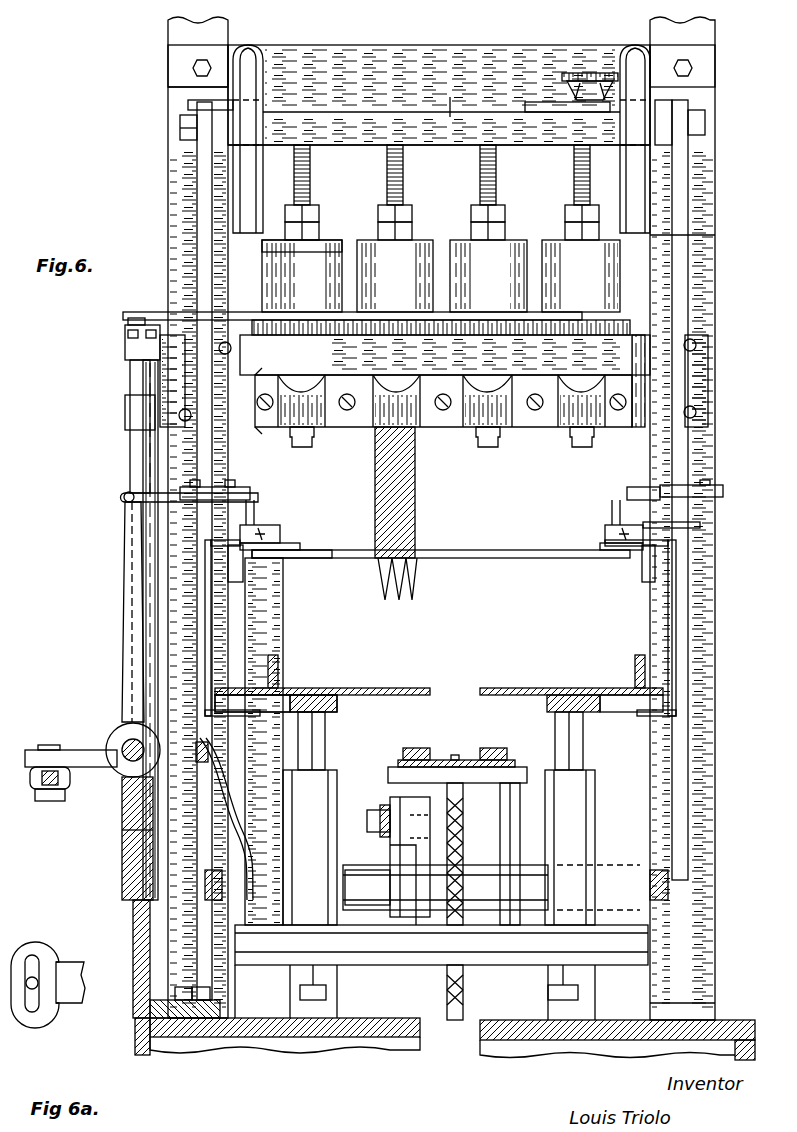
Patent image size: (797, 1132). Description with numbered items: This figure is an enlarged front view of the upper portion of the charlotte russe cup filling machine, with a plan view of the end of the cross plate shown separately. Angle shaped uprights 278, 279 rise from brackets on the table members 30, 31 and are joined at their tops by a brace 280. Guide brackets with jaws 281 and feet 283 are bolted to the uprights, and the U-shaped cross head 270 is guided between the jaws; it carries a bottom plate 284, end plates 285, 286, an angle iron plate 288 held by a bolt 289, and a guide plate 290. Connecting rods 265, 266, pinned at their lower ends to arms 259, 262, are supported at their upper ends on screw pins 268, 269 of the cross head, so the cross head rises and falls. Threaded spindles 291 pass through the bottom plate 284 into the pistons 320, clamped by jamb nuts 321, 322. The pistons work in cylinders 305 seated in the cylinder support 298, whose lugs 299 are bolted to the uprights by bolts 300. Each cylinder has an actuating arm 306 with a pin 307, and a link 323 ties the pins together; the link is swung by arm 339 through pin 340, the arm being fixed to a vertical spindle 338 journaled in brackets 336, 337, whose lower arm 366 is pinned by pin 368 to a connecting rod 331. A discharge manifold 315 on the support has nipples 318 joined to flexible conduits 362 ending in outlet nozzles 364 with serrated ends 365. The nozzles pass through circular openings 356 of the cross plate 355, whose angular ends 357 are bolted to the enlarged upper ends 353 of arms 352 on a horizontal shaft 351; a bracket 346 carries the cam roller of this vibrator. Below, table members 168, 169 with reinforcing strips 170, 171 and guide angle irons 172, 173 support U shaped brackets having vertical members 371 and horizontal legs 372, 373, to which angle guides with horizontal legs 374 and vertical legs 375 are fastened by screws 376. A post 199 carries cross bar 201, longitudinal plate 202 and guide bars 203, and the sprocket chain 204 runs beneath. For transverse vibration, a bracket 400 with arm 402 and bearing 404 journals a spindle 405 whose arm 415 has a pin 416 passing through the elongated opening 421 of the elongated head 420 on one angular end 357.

In FIG. 6, the table member 30 is at (328, 1040).
In FIG. 6, the table portion 31 is at (722, 1025).
In FIG. 6, the table member 168 is at (616, 688).
In FIG. 6, the table member 169 is at (363, 688).
In FIG. 6, the reinforcing strip 170 is at (600, 708).
In FIG. 6, the reinforcing strip 171 is at (337, 707).
In FIG. 6, the guide angle iron 172 is at (638, 660).
In FIG. 6, the guide angle iron 173 is at (276, 665).
In FIG. 6, the post 199 is at (505, 815).
In FIG. 6, the cross bar 201 is at (525, 770).
In FIG. 6, the longitudinal plate 202 is at (400, 765).
In FIG. 6, the guide bars 203 is at (410, 750).
In FIG. 6, the sprocket chain 204 is at (458, 757).
In FIG. 6, the arm 259 is at (222, 890).
In FIG. 6, the arm 262 is at (655, 882).
In FIG. 6, the connecting rod 265 is at (200, 205).
In FIG. 6, the connecting rod 266 is at (680, 285).
In FIG. 6, the screw pin 268 is at (182, 128).
In FIG. 6, the screw pin 269 is at (700, 110).
In FIG. 6, the cross head 270 is at (431, 101).
In FIG. 6, the angle shaped upright 278 is at (228, 998).
In FIG. 6, the angle shaped upright 279 is at (700, 950).
In FIG. 6, the brace 280 is at (439, 95).
In FIG. 6, the jaw 281 is at (290, 95).
In FIG. 6, the foot 283 is at (180, 68).
In FIG. 6, the bottom plate 284 is at (345, 130).
In FIG. 6, the end plate 285 is at (200, 103).
In FIG. 6, the end plate 286 is at (660, 138).
In FIG. 6, the angle iron plate 288 is at (568, 100).
In FIG. 6, the bolt 289 is at (605, 73).
In FIG. 6, the guide plate 290 is at (542, 107).
In FIG. 6, the threaded spindle 291 is at (478, 155).
In FIG. 6, the cylinder support 298 is at (599, 381).
In FIG. 6, the lug 299 is at (165, 375).
In FIG. 6, the bolt 300 is at (232, 352).
In FIG. 6, the cylinder 305 is at (441, 276).
In FIG. 6, the actuating arm 306 is at (300, 322).
In FIG. 6, the pin 307 is at (372, 322).
In FIG. 6, the discharge manifold 315 is at (495, 447).
In FIG. 6, the nipple 318 is at (305, 447).
In FIG. 6, the piston 320 is at (322, 240).
In FIG. 6, the jamb nut 321 is at (500, 213).
In FIG. 6, the jamb nut 322 is at (503, 225).
In FIG. 6, the link 323 is at (140, 318).
In FIG. 6, the connecting rod 331 is at (60, 780).
In FIG. 6, the journal bracket 336 is at (122, 870).
In FIG. 6, the journal bracket 337 is at (128, 406).
In FIG. 6, the vertical spindle 338 is at (140, 455).
In FIG. 6, the arm 339 is at (125, 345).
In FIG. 6, the pin 340 is at (122, 312).
In FIG. 6, the bracket 346 is at (210, 752).
In FIG. 6, the horizontal shaft 351 is at (322, 552).
In FIG. 6, the arm 352 is at (235, 850).
In FIG. 6, the enlarged upper end 353 is at (692, 500).
In FIG. 6, the cross plate 355 is at (330, 558).
In FIG. 6, the circular opening 356 is at (565, 550).
In FIG. 6, the angular end 357 is at (260, 500).
In FIG. 6A, the angular end 357 is at (62, 1003).
In FIG. 6, the flexible conduit 362 is at (415, 510).
In FIG. 6, the outlet nozzle 364 is at (420, 580).
In FIG. 6, the serrated end 365 is at (385, 585).
In FIG. 6, the arm 366 is at (35, 755).
In FIG. 6, the pin 368 is at (48, 745).
In FIG. 6, the vertical member 371 is at (211, 636).
In FIG. 6, the horizontal leg 372 is at (622, 730).
In FIG. 6, the horizontal leg 373 is at (700, 525).
In FIG. 6, the horizontal leg 374 is at (292, 545).
In FIG. 6, the vertical leg 375 is at (245, 578).
In FIG. 6, the screw 376 is at (265, 525).
In FIG. 6, the bracket 400 is at (140, 1020).
In FIG. 6, the arm 402 is at (133, 925).
In FIG. 6, the journal bearing 404 is at (122, 748).
In FIG. 6, the spindle 405 is at (125, 745).
In FIG. 6, the arm 415 is at (125, 580).
In FIG. 6, the pin 416 is at (125, 491).
In FIG. 6A, the pin 416 is at (40, 983).
In FIG. 6, the elongated head 420 is at (124, 501).
In FIG. 6A, the elongated head 420 is at (30, 1028).
In FIG. 6A, the elongated opening 421 is at (33, 960).